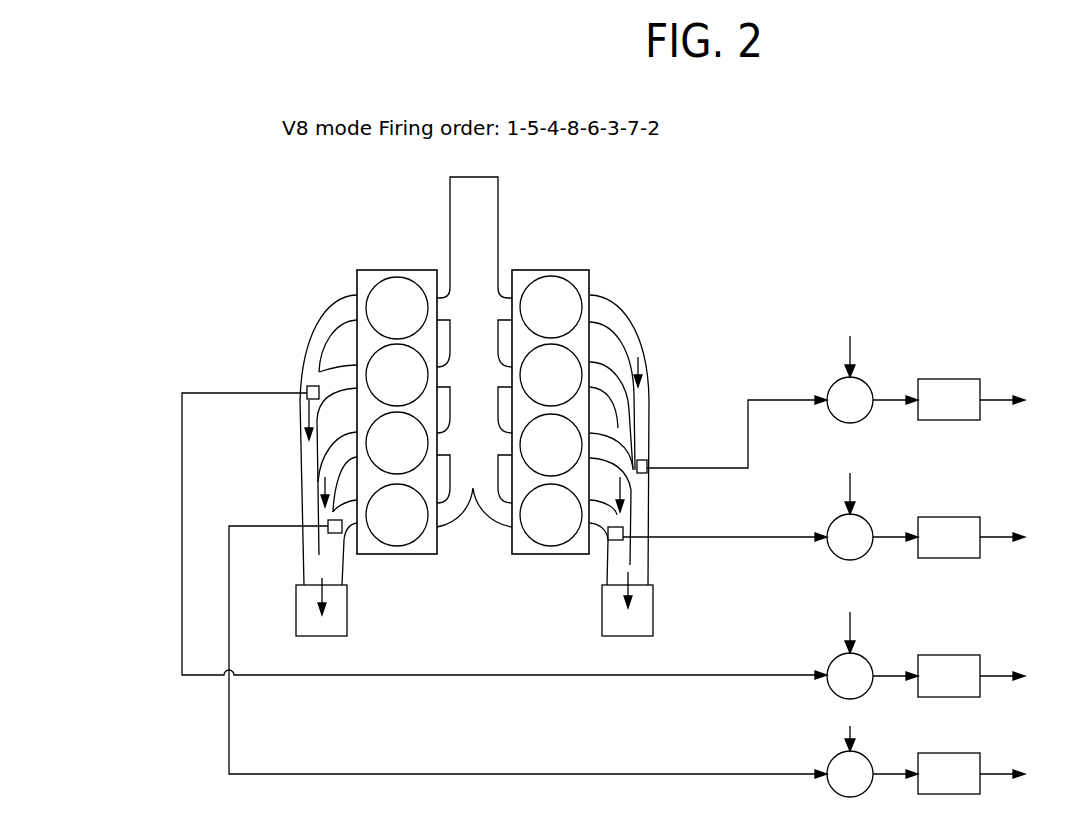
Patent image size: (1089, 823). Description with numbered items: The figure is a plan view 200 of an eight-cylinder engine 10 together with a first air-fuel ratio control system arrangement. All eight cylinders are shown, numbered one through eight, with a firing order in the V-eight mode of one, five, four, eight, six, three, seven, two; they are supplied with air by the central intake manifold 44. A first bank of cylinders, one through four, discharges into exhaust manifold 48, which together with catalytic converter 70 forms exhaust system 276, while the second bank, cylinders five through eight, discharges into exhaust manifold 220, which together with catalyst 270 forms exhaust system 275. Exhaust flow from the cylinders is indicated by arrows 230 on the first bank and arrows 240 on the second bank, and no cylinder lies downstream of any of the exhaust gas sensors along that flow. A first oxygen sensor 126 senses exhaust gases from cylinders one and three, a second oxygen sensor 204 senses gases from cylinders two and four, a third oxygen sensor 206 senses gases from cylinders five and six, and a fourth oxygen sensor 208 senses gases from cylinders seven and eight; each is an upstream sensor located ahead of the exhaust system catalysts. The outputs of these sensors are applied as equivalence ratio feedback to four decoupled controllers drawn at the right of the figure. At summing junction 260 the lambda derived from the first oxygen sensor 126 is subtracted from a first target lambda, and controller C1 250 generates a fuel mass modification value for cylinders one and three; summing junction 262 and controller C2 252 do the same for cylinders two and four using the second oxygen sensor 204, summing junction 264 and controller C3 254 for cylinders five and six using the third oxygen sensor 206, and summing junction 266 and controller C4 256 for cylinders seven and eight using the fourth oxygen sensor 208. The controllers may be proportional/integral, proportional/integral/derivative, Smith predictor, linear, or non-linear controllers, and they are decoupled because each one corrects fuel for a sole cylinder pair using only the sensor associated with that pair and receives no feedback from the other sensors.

The plan view 200 is at (165, 128).
The engine 10 is at (338, 226).
The intake manifold 44 is at (487, 218).
The exhaust manifold 48 is at (630, 353).
The exhaust manifold 220 is at (318, 348).
The exhaust system 275 is at (251, 323).
The exhaust system 276 is at (651, 311).
The third oxygen sensor 206 is at (308, 388).
The fourth oxygen sensor 208 is at (325, 533).
The first oxygen sensor 126 is at (647, 460).
The second oxygen sensor 204 is at (623, 532).
The arrows 240 is at (303, 415).
The arrows 230 is at (640, 365).
The catalyst 270 is at (347, 618).
The catalytic converter 70 is at (653, 612).
The summing junction 260 is at (862, 377).
The summing junction 262 is at (862, 514).
The summing junction 264 is at (862, 653).
The summing junction 266 is at (862, 751).
The controller C1 250 is at (942, 379).
The controller C2 252 is at (948, 517).
The controller C3 254 is at (948, 655).
The controller C4 256 is at (948, 753).